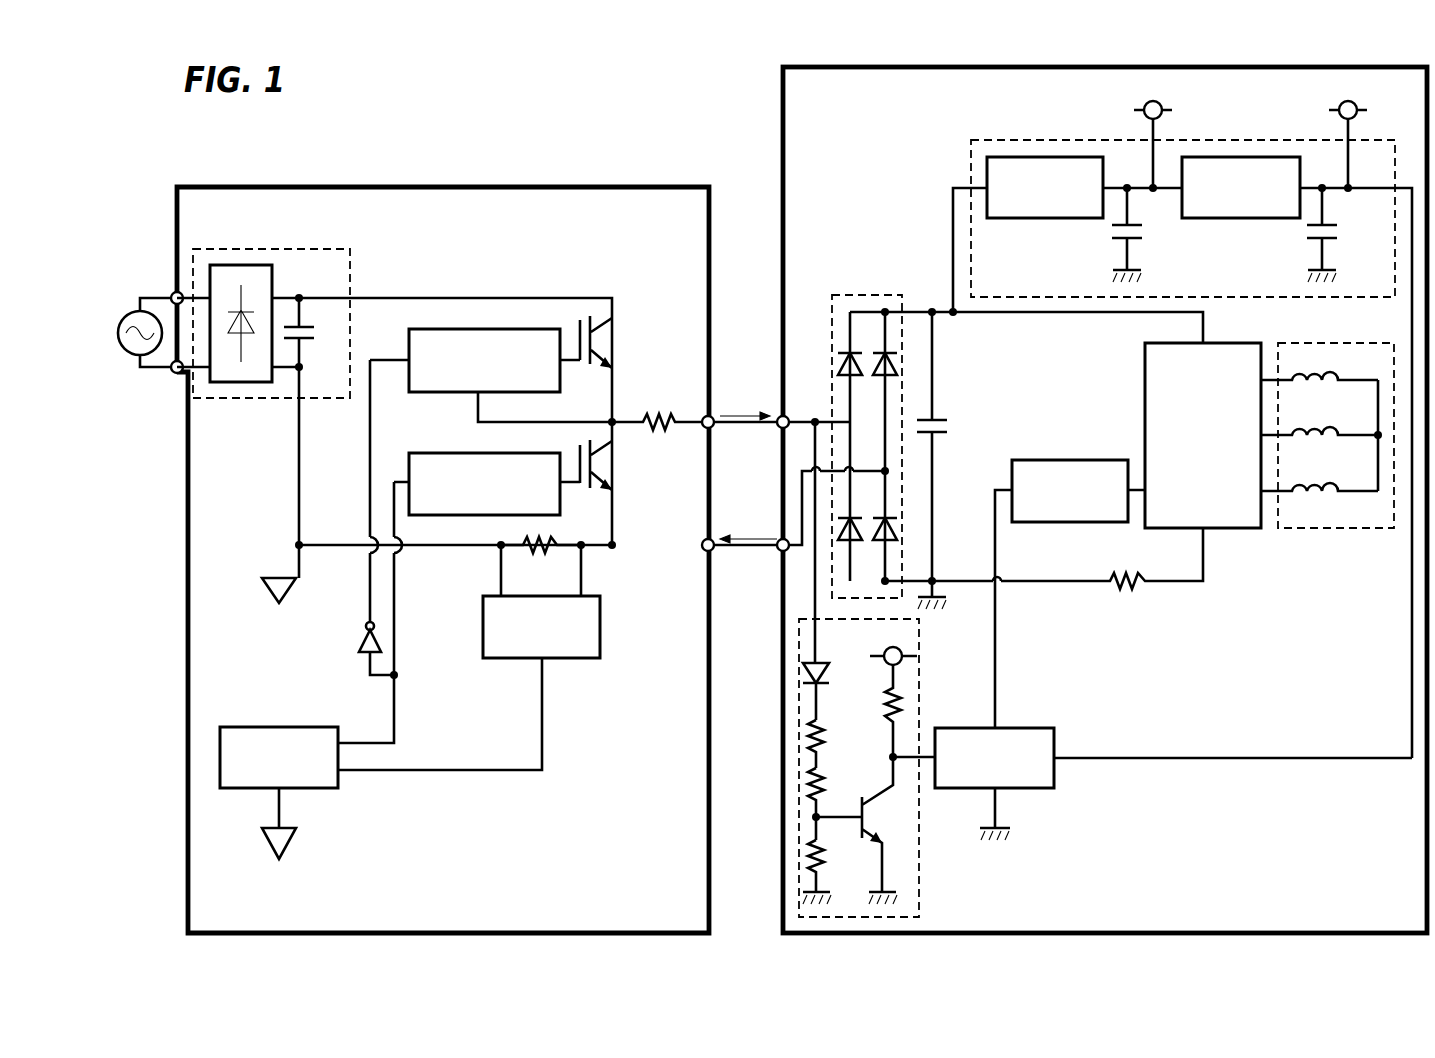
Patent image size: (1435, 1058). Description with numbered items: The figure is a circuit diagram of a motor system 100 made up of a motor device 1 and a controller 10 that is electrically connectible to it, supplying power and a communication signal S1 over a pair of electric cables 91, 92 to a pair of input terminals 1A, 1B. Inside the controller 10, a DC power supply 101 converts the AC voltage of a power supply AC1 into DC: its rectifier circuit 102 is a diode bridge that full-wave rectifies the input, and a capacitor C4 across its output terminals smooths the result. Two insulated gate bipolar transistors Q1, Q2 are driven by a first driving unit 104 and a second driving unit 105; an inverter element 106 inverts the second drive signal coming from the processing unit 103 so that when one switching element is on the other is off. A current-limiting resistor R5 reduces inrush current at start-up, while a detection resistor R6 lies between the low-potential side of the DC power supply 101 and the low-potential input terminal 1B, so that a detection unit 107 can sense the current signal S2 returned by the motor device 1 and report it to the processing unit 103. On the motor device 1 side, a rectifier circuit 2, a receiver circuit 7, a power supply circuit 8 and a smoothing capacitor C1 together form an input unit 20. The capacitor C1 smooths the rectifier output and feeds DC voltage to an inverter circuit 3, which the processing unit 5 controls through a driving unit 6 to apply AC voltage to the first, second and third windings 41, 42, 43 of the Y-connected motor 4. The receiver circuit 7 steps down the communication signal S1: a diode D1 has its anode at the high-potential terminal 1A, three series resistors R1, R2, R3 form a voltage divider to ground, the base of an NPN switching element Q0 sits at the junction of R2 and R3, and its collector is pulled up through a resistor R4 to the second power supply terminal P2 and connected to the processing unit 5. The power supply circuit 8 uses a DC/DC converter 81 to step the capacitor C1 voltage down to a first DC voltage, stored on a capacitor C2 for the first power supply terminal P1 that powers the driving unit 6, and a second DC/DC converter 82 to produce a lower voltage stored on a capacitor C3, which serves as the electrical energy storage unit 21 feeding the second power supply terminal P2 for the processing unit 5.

The motor system 100 is at (742, 108).
The controller 10 is at (658, 192).
The motor device 1 is at (786, 155).
The DC power supply 101 is at (352, 277).
The rectifier circuit 102 is at (262, 302).
The processing unit 103 is at (248, 726).
The first driving unit 104 is at (408, 348).
The second driving unit 105 is at (428, 452).
The inverter element 106 is at (358, 648).
The detection unit 107 is at (600, 633).
The electric cable 91 is at (741, 430).
The electric cable 92 is at (731, 553).
The input terminal 1A is at (786, 421).
The input terminal 1B is at (784, 552).
The rectifier circuit 2 is at (879, 294).
The input unit 20 is at (972, 446).
The electrical energy storage unit 21 is at (1345, 233).
The power supply circuit 8 is at (970, 154).
The DC/DC converter 81 is at (1017, 156).
The DC/DC converter 82 is at (1250, 156).
The inverter circuit 3 is at (1145, 360).
The motor 4 is at (1338, 532).
The first winding 41 is at (1319, 364).
The second winding 42 is at (1319, 419).
The third winding 43 is at (1319, 475).
The processing unit 5 is at (1045, 727).
The driving unit 6 is at (1071, 459).
The receiver circuit 7 is at (920, 672).
The power supply AC1 is at (134, 312).
The capacitor C1 is at (972, 446).
The capacitor C2 is at (1140, 233).
The capacitor C3 is at (1345, 233).
The capacitor C4 is at (311, 332).
The switching element Q0 is at (875, 828).
The switching element Q1 is at (613, 342).
The switching element Q2 is at (613, 465).
The resistor R1 is at (832, 744).
The resistor R2 is at (832, 804).
The resistor R3 is at (829, 872).
The resistor R4 is at (876, 711).
The current-limiting resistor R5 is at (660, 409).
The detection resistor R6 is at (541, 563).
The diode D1 is at (831, 690).
The first power supply terminal P1 is at (1143, 105).
The second power supply terminal P2 is at (1338, 105).
The communication signal S1 is at (745, 402).
The current signal S2 is at (748, 525).